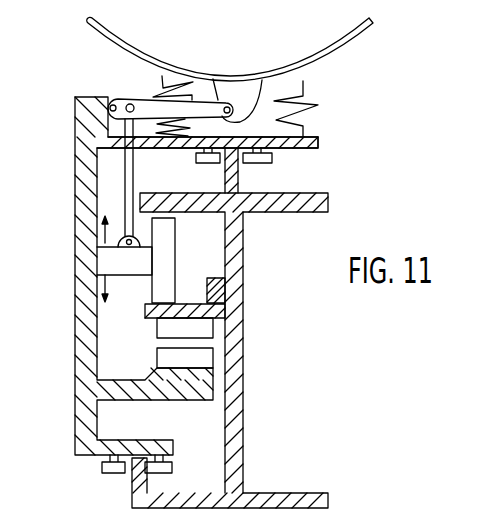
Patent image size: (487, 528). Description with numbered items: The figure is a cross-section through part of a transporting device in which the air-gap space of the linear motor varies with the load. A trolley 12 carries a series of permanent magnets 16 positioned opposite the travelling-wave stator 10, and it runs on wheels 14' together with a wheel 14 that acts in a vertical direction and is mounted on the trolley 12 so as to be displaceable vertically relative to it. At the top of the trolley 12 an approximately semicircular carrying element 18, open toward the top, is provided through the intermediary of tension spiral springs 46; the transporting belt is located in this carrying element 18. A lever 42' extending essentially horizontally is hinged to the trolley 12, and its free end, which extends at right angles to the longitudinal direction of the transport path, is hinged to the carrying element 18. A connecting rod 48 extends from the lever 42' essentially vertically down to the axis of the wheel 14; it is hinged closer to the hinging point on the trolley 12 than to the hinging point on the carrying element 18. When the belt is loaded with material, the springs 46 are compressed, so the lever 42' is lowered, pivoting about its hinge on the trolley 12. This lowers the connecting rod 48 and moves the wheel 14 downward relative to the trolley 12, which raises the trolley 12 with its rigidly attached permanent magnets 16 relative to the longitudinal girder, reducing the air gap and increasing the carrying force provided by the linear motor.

The travelling-wave stator 10 is at (163, 332).
The trolley 12 is at (357, 141).
The wheel 14 is at (184, 260).
The wheels 14' is at (259, 168).
The permanent magnets 16 is at (163, 362).
The carrying element 18 is at (272, 78).
The lever 42' is at (177, 94).
The tension spiral springs 46 is at (316, 105).
The connecting rod 48 is at (127, 170).